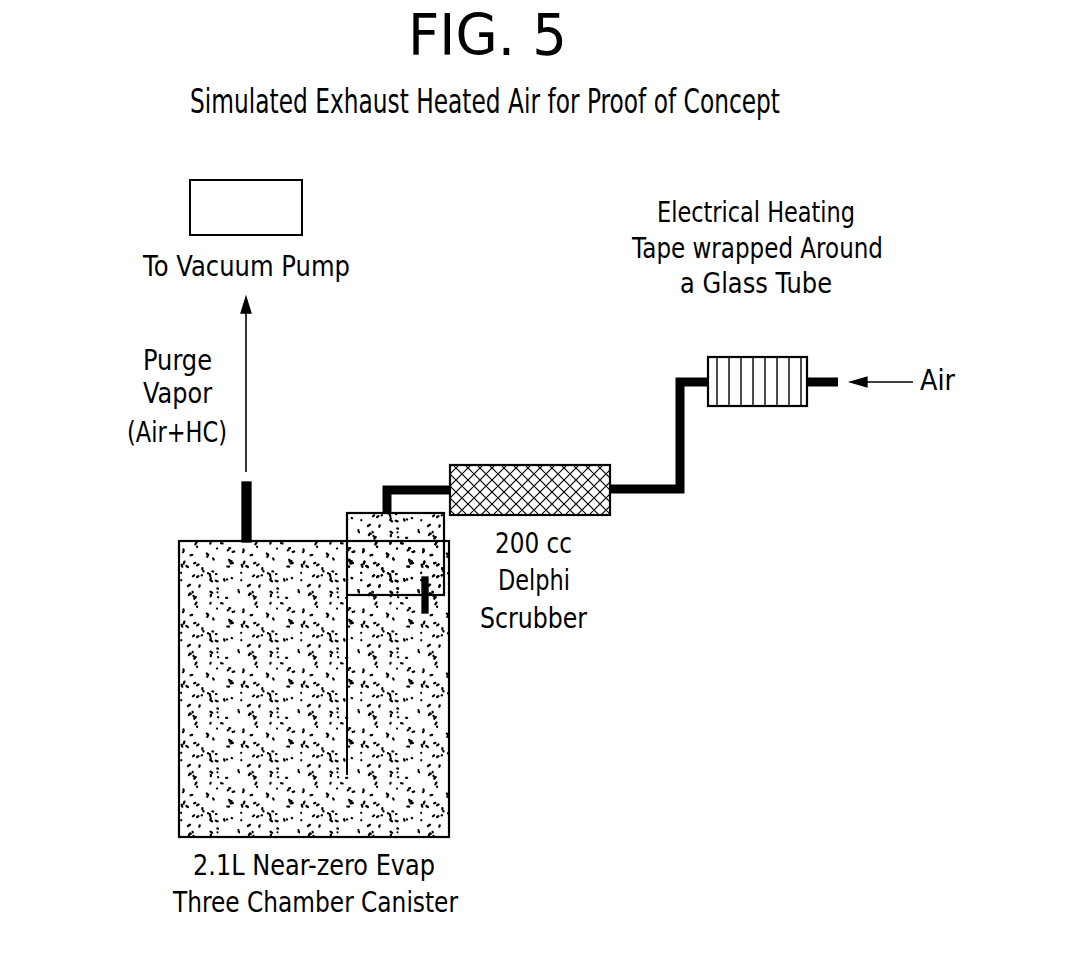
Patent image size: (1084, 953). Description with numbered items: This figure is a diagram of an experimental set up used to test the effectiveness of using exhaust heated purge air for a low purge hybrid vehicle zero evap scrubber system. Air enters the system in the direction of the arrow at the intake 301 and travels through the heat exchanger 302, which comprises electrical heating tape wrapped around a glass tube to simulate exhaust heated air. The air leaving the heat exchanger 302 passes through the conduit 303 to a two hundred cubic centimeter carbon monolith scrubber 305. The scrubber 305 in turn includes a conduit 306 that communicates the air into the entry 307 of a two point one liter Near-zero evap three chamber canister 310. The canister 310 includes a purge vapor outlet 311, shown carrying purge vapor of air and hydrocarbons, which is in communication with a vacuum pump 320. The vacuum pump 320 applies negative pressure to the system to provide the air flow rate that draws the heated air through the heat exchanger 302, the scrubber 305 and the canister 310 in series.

The intake 301 is at (820, 377).
The heat exchanger 302 is at (780, 407).
The conduit 303 is at (685, 490).
The carbon monolith scrubber 305 is at (613, 506).
The conduit 306 is at (415, 484).
The entry 307 is at (368, 518).
The three chamber canister 310 is at (125, 660).
The purge vapor outlet 311 is at (242, 515).
The vacuum pump 320 is at (268, 223).